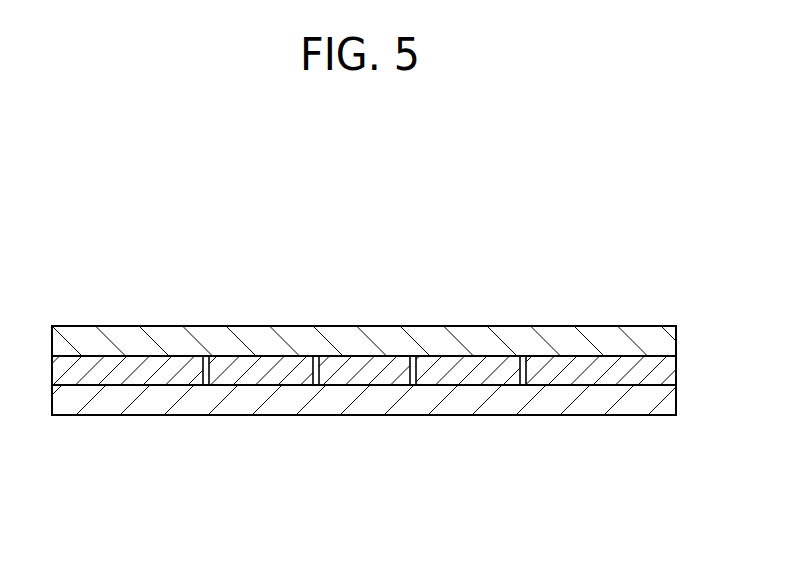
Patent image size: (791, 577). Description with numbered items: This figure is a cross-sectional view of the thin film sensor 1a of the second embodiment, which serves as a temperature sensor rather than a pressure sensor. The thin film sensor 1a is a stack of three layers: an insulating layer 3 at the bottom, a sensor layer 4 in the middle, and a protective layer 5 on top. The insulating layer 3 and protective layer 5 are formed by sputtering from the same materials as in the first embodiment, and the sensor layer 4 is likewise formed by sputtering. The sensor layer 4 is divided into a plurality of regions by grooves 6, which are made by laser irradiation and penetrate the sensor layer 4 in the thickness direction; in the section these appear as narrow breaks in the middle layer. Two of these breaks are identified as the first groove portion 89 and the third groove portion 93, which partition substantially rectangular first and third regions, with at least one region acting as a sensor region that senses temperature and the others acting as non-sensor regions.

The thin film sensor 1a is at (590, 197).
The protective layer 5 is at (667, 343).
The sensor layer 4 is at (667, 375).
The insulating layer 3 is at (667, 407).
The groove 6 is at (364, 434).
The first groove portion 89 is at (212, 372).
The third groove portion 93 is at (520, 372).